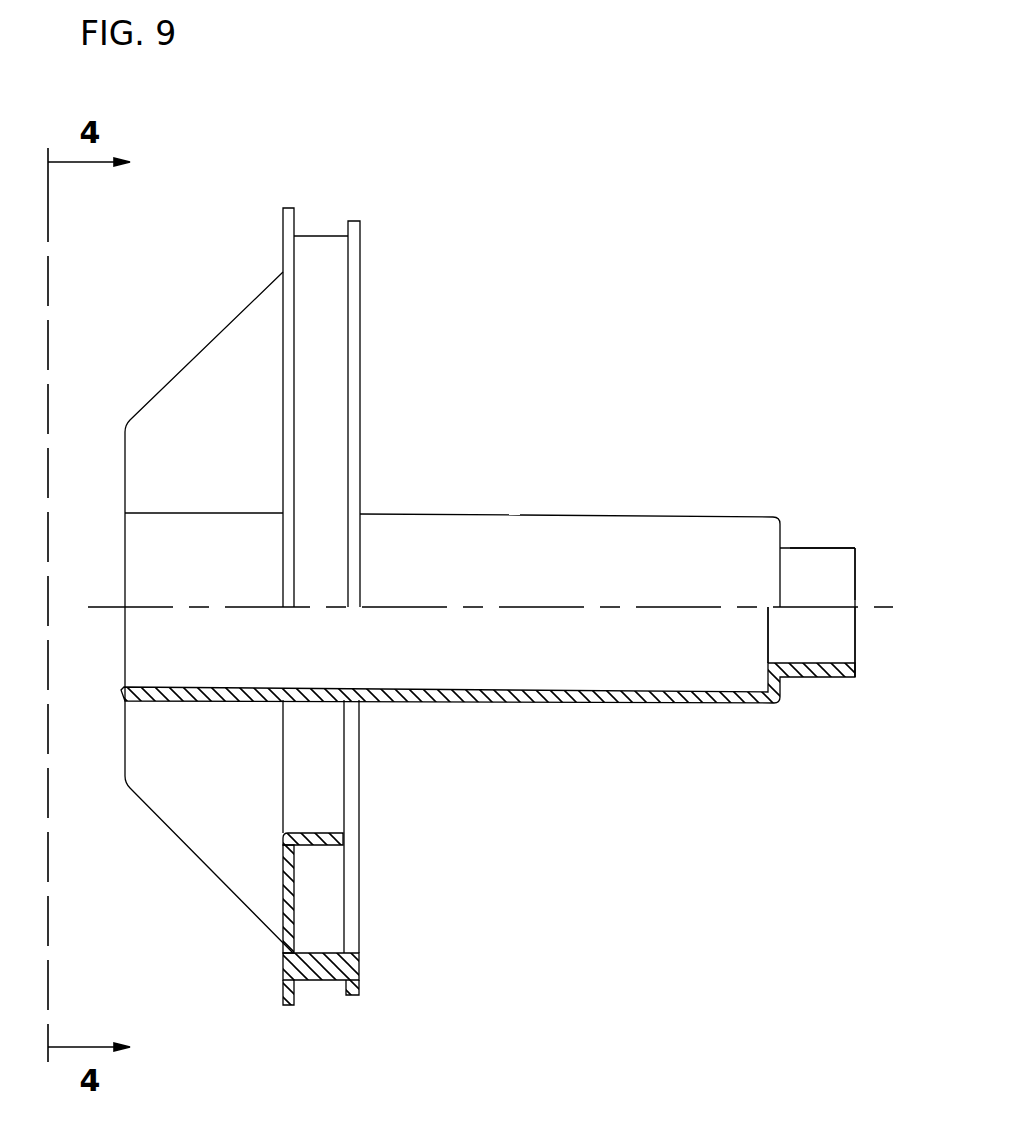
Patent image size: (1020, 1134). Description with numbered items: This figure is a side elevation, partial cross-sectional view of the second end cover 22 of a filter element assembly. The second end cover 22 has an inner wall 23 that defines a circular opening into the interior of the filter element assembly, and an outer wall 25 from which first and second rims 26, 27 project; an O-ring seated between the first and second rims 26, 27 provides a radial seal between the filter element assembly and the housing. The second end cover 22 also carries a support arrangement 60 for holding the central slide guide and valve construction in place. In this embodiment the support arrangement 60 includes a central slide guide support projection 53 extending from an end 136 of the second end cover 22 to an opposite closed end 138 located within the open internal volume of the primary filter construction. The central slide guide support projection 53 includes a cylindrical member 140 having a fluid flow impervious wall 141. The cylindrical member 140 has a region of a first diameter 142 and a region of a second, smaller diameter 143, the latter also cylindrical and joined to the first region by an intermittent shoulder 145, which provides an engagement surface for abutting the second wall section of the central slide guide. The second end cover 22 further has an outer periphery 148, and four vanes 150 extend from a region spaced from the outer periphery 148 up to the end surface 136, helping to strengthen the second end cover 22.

The second end cover 22 is at (484, 264).
The inner wall 23 is at (313, 833).
The outer wall 25 is at (359, 972).
The first rim 26 is at (285, 1007).
The second rim 27 is at (353, 997).
The central slide guide support projection 53 is at (477, 453).
The support arrangement 60 is at (800, 801).
The end surface 136 is at (124, 445).
The closed end 138 is at (857, 575).
The cylindrical member 140 is at (517, 515).
The fluid flow impervious wall 141 is at (583, 696).
The region of a first diameter 142 is at (627, 516).
The region of a second, smaller diameter 143 is at (815, 548).
The shoulder 145 is at (782, 537).
The outer periphery 148 is at (288, 208).
The vanes 150 is at (200, 353).